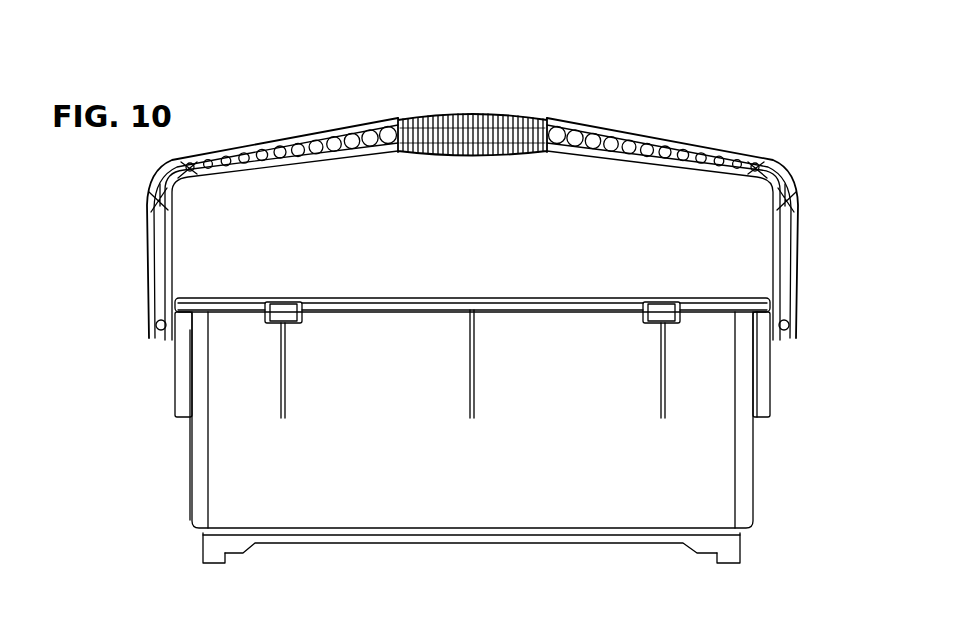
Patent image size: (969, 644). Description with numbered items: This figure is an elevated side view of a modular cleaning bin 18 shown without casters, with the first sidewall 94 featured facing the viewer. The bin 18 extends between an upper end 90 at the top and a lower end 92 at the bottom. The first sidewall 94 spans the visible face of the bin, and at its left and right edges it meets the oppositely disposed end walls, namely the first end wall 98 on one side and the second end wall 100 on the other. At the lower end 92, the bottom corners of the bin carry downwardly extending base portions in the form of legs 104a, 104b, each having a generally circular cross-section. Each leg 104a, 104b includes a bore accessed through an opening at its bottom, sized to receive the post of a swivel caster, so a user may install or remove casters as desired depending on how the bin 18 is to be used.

The modular cleaning bin 18 is at (260, 113).
The upper end 90 is at (543, 289).
The lower end 92 is at (529, 560).
The first sidewall 94 is at (258, 443).
The first end wall 98 is at (754, 463).
The second end wall 100 is at (190, 497).
The leg 104a is at (203, 557).
The leg 104b is at (740, 557).